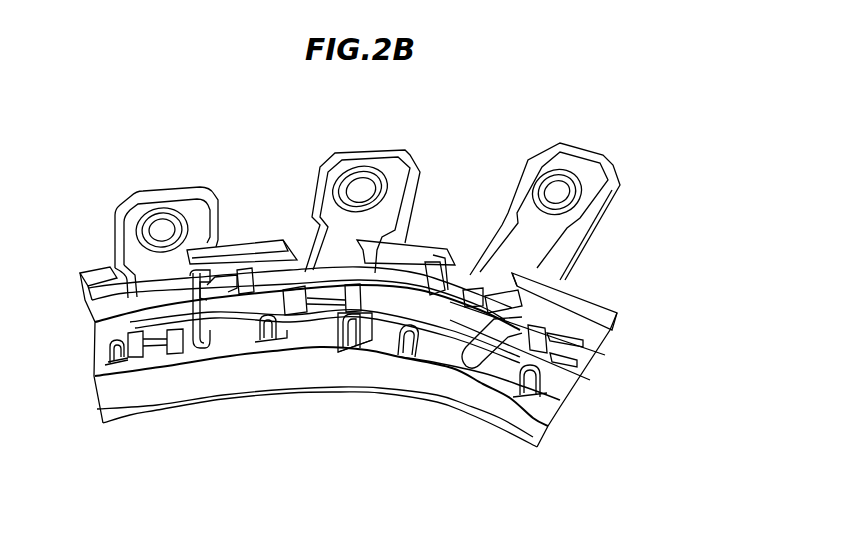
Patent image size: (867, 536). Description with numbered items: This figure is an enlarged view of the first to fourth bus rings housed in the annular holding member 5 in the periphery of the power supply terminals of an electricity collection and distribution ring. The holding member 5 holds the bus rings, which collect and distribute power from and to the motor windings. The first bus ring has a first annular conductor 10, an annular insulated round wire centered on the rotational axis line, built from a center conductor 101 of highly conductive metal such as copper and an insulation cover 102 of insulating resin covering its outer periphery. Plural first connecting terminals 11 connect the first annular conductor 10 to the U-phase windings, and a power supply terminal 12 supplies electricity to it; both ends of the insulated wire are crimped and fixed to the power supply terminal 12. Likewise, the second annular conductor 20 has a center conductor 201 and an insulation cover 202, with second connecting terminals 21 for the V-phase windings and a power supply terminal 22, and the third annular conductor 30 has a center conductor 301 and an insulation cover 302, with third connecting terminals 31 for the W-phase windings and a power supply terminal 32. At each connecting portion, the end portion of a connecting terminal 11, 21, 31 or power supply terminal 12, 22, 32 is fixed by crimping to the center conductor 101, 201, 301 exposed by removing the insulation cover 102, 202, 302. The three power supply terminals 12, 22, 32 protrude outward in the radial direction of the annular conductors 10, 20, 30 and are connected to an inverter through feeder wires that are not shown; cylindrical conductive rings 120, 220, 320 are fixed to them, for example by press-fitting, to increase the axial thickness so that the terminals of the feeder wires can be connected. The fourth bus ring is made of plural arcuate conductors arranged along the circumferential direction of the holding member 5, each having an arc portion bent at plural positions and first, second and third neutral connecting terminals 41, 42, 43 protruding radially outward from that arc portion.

The annular holding member 5 is at (520, 427).
The first annular conductor 10 is at (236, 452).
The center conductor 101 is at (158, 357).
The insulation cover 102 is at (224, 330).
The first connecting terminal 11 is at (345, 328).
The power supply terminal 12 is at (160, 207).
The cylindrical conductive ring 120 is at (177, 218).
The second annular conductor 20 is at (445, 452).
The center conductor 201 is at (362, 338).
The insulation cover 202 is at (441, 313).
The second connecting terminal 21 is at (543, 337).
The power supply terminal 22 is at (368, 162).
The cylindrical conductive ring 220 is at (380, 184).
The third annular conductor 30 is at (681, 222).
The center conductor 301 is at (510, 292).
The insulation cover 302 is at (550, 320).
The third connecting terminal 31 is at (243, 275).
The power supply terminal 32 is at (577, 165).
The cylindrical conductive ring 320 is at (580, 187).
The first neutral connecting terminal 41 is at (276, 333).
The second neutral connecting terminal 42 is at (431, 292).
The third neutral connecting terminal 43 is at (540, 383).